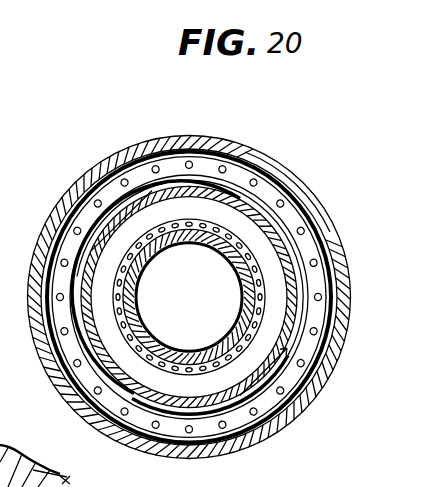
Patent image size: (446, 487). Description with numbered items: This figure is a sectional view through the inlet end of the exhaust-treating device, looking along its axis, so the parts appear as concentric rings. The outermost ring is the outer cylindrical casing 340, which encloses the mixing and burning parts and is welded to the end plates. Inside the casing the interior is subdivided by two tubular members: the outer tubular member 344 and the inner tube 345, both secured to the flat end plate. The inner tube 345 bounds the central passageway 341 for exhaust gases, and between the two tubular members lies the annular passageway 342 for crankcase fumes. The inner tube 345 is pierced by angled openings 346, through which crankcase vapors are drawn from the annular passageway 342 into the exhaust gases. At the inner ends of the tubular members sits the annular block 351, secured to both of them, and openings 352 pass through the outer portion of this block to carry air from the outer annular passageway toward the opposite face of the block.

The outer cylindrical casing 340 is at (305, 182).
The openings through the outer portion of the block 352 is at (258, 183).
The tubular member 344 is at (240, 203).
The annular passageway for crankcase fumes 342 is at (194, 393).
The openings 346 is at (156, 224).
The inner tube 345 is at (174, 246).
The central passageway for exhaust gases 341 is at (218, 313).
The annular block 351 is at (67, 478).